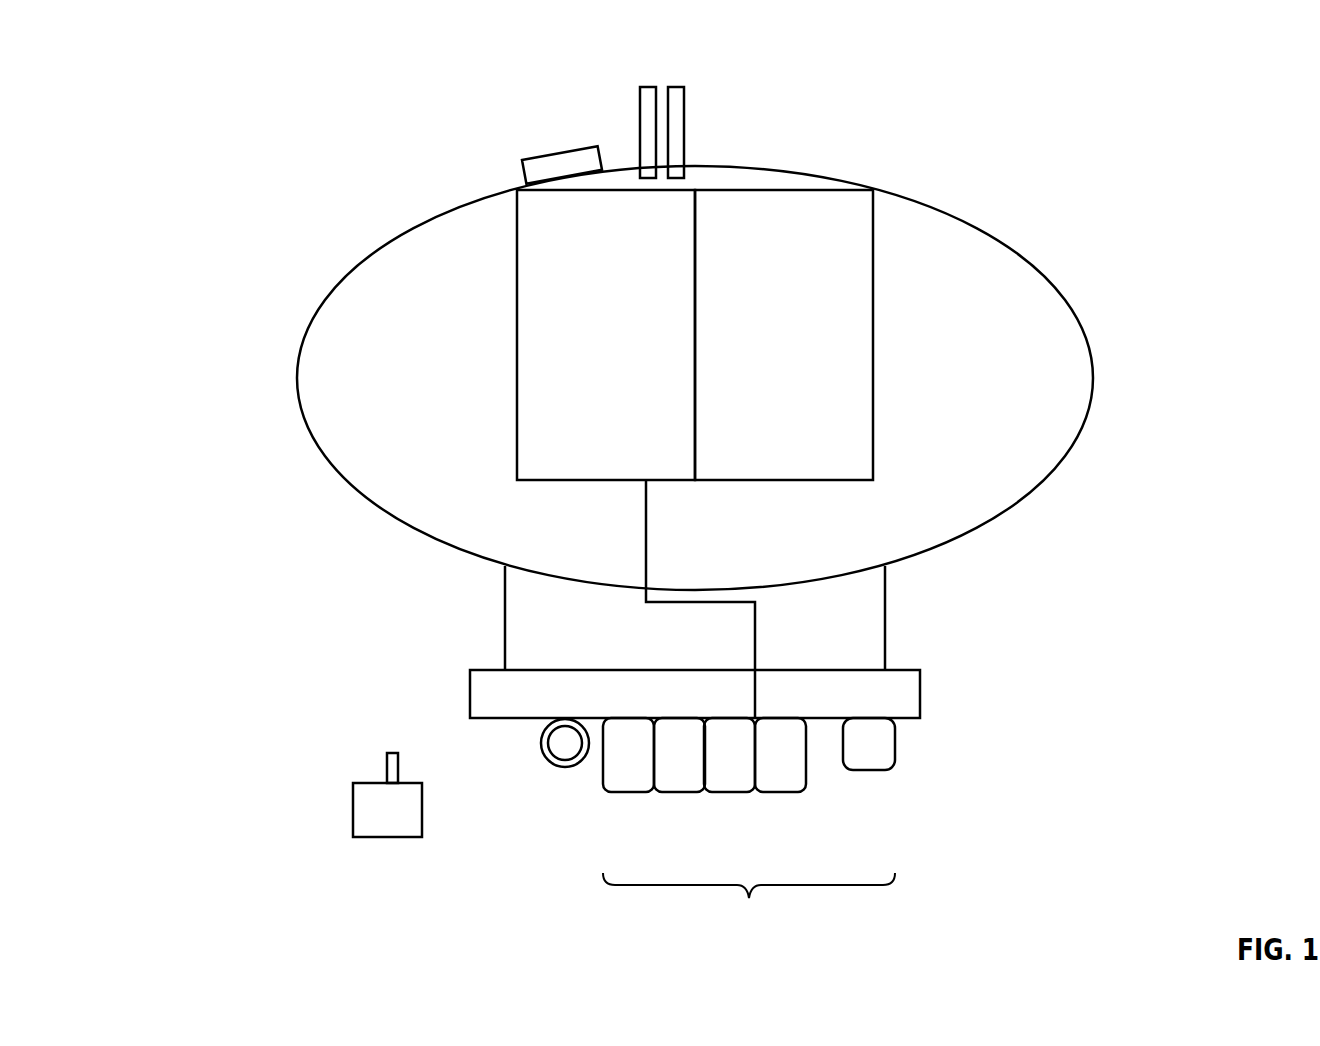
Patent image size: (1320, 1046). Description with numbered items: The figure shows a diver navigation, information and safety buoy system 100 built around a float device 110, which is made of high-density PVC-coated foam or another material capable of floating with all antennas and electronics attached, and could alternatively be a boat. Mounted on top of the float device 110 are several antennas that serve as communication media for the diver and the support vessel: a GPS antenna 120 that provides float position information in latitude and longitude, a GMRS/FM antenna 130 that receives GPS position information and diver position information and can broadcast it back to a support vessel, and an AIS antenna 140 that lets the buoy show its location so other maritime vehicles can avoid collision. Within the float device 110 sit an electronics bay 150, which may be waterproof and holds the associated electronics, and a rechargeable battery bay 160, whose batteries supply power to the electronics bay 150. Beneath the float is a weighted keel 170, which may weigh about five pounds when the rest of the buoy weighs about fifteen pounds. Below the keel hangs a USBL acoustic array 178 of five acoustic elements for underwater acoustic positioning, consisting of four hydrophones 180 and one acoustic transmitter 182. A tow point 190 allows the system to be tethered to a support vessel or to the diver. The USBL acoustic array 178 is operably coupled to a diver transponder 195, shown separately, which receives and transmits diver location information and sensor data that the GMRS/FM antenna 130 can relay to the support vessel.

The diver navigation, information and safety buoy system 100 is at (182, 82).
The float device 110 is at (297, 360).
The GPS antenna 120 is at (505, 176).
The GMRS/FM antenna 130 is at (635, 103).
The AIS antenna 140 is at (698, 110).
The electronics bay 150 is at (547, 318).
The rechargeable battery bay 160 is at (835, 340).
The weighted keel 170 is at (930, 690).
The USBL acoustic array 178 is at (749, 905).
The hydrophones 180 is at (728, 802).
The acoustic transmitter 182 is at (868, 772).
The tow point 190 is at (540, 745).
The diver transponder 195 is at (348, 815).